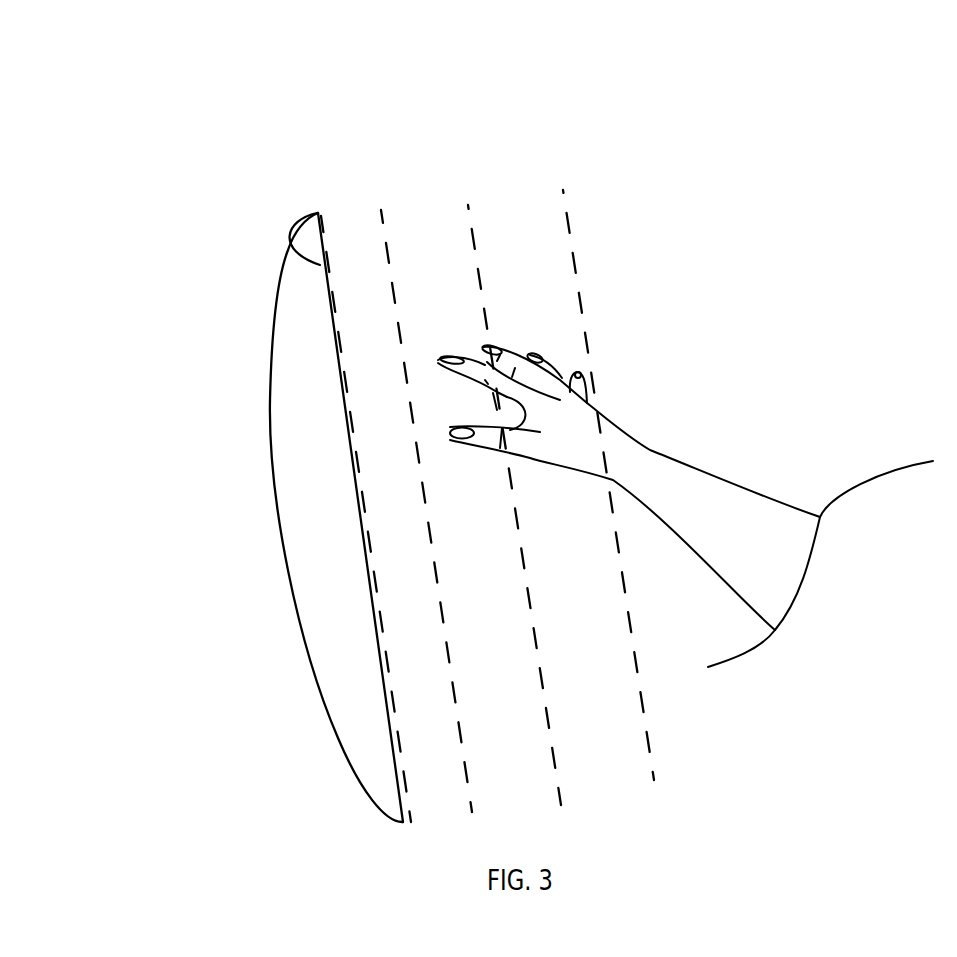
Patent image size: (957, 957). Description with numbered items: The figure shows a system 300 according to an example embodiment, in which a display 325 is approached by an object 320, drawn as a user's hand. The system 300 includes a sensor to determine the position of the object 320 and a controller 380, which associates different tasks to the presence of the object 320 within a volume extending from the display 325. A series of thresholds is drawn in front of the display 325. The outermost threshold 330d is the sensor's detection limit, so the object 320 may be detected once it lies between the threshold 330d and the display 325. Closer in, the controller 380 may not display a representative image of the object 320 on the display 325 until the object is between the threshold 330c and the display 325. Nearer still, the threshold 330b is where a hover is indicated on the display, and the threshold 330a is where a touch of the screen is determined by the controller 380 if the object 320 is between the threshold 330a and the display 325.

The system 300 is at (272, 350).
The display 325 is at (291, 240).
The controller 380 is at (303, 518).
The threshold 330a is at (317, 213).
The threshold 330b is at (377, 208).
The threshold 330c is at (467, 203).
The threshold 330d is at (560, 187).
The object 320 is at (485, 368).